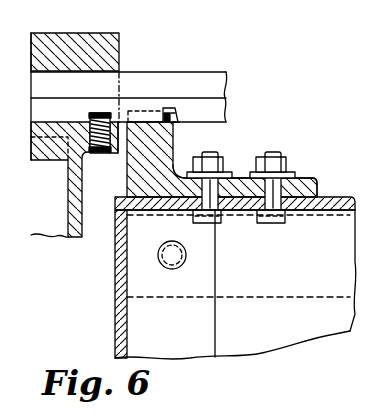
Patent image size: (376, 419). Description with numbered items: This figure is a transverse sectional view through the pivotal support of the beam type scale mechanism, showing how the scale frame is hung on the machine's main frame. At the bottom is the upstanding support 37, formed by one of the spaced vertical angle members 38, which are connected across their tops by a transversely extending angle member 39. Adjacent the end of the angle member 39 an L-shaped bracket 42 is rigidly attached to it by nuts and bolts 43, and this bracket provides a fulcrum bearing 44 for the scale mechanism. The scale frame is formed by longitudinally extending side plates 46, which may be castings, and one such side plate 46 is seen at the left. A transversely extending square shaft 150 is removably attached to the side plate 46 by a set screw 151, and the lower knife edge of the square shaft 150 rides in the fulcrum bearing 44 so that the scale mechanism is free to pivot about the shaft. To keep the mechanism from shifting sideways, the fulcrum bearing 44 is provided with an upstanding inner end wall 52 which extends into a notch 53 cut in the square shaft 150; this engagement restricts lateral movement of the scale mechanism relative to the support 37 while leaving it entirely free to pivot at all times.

The upstanding support 37 is at (211, 361).
The vertical angle member 38 is at (115, 318).
The transversely extending angle member 39 is at (342, 200).
The L-shaped bracket 42 is at (165, 157).
The nuts and bolts 43 is at (220, 225).
The fulcrum bearing 44 is at (146, 125).
The side plate 46 is at (72, 218).
The upstanding inner end wall 52 is at (178, 122).
The notch 53 is at (167, 107).
The square shaft 150 is at (208, 82).
The set screw 151 is at (107, 114).